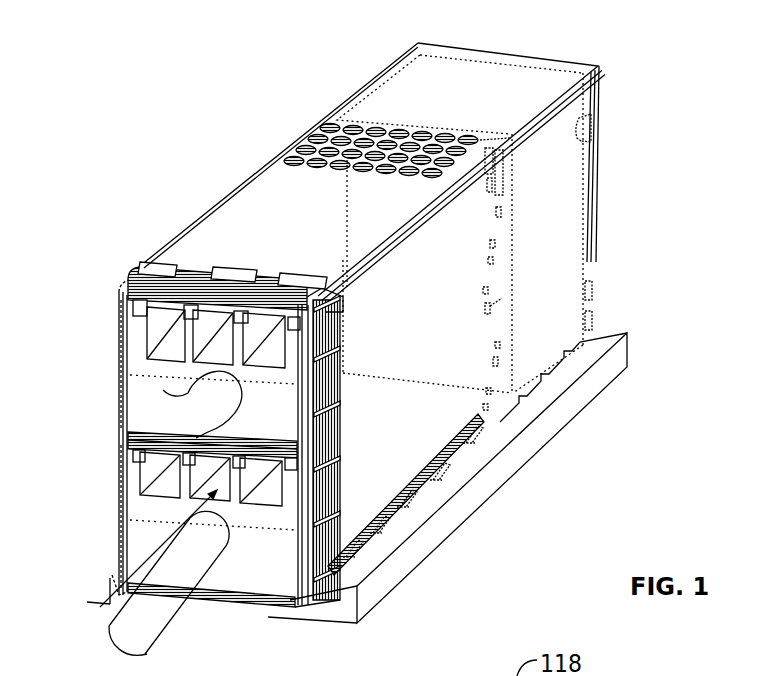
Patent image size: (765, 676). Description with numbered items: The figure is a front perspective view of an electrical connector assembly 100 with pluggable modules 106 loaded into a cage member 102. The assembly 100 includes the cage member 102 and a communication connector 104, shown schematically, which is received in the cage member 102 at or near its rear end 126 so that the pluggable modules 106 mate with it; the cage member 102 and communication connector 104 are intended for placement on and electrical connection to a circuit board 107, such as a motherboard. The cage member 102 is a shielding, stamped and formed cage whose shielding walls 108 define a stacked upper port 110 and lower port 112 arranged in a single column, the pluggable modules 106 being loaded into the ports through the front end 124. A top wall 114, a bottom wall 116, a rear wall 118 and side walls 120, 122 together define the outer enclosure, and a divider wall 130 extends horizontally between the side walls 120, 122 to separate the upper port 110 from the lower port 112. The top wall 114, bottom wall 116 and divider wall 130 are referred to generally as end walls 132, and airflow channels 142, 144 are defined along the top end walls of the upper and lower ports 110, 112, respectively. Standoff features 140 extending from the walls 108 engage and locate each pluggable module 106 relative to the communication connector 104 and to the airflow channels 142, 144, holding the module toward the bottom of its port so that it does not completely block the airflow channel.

The electrical connector assembly 100 is at (170, 145).
The cage member 102 is at (504, 44).
The communication connector 104 is at (557, 193).
The pluggable module 106 is at (153, 363).
The circuit board 107 is at (573, 363).
The shielding wall 108 is at (380, 475).
The upper port 110 is at (125, 318).
The lower port 112 is at (122, 482).
The top wall 114 is at (293, 178).
The bottom wall 116 is at (352, 545).
The rear wall 118 is at (580, 64).
The side wall 120 is at (118, 355).
The side wall 122 is at (408, 443).
The front end 124 is at (115, 517).
The rear end 126 is at (604, 118).
The divider wall 130 is at (127, 438).
The end wall 132 is at (233, 230).
The standoff feature 140 is at (123, 297).
The airflow channel 142 is at (172, 312).
The airflow channel 144 is at (153, 543).